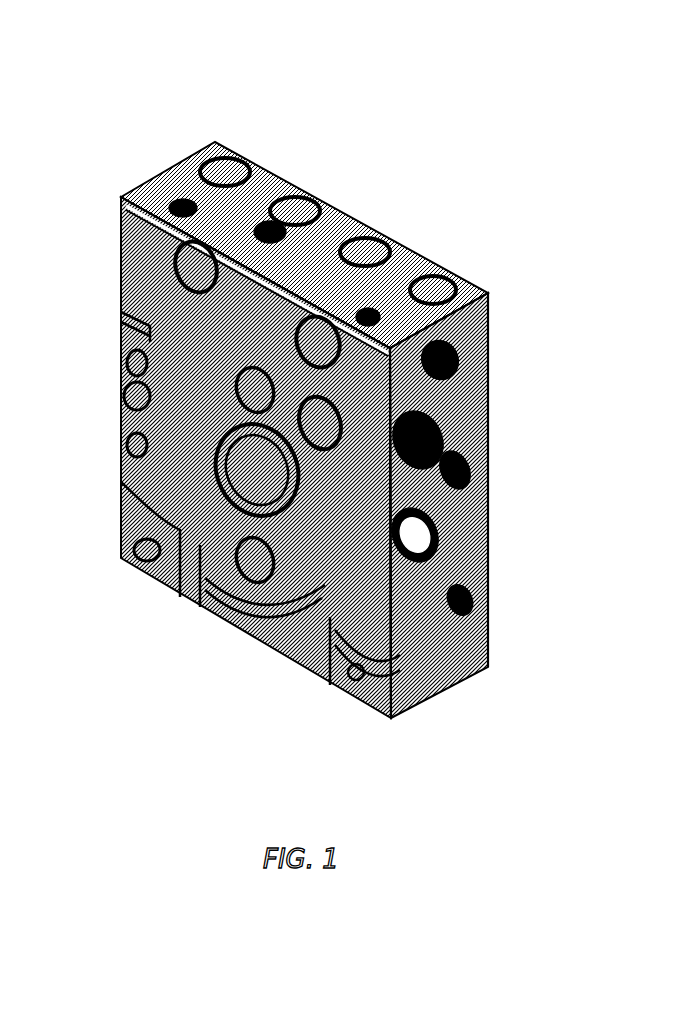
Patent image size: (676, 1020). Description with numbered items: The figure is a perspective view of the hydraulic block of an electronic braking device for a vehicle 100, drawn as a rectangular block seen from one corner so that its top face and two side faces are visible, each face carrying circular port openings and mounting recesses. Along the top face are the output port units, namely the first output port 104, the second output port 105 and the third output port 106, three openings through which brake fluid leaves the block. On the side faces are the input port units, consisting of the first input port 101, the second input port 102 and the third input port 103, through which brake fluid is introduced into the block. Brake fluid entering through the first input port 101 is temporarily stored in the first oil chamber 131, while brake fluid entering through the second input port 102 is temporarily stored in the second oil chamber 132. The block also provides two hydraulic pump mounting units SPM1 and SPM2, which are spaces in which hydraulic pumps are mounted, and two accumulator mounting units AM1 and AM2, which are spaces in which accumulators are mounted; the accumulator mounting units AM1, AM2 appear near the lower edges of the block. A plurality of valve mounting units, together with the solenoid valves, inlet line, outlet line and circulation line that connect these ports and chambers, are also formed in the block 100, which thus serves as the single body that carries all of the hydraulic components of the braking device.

The hydraulic block of an electronic braking device for a vehicle 100 is at (108, 50).
The first input port 101 is at (175, 265).
The second input port 102 is at (332, 355).
The third input port 103 is at (305, 200).
The first output port 104 is at (238, 160).
The second output port 105 is at (450, 280).
The third output port 106 is at (378, 241).
The first oil chamber 131 is at (121, 331).
The second oil chamber 132 is at (340, 432).
The hydraulic pump mounting unit SPM1 is at (128, 396).
The hydraulic pump mounting unit SPM2 is at (438, 538).
The accumulator mounting unit AM1 is at (198, 608).
The accumulator mounting unit AM2 is at (305, 668).